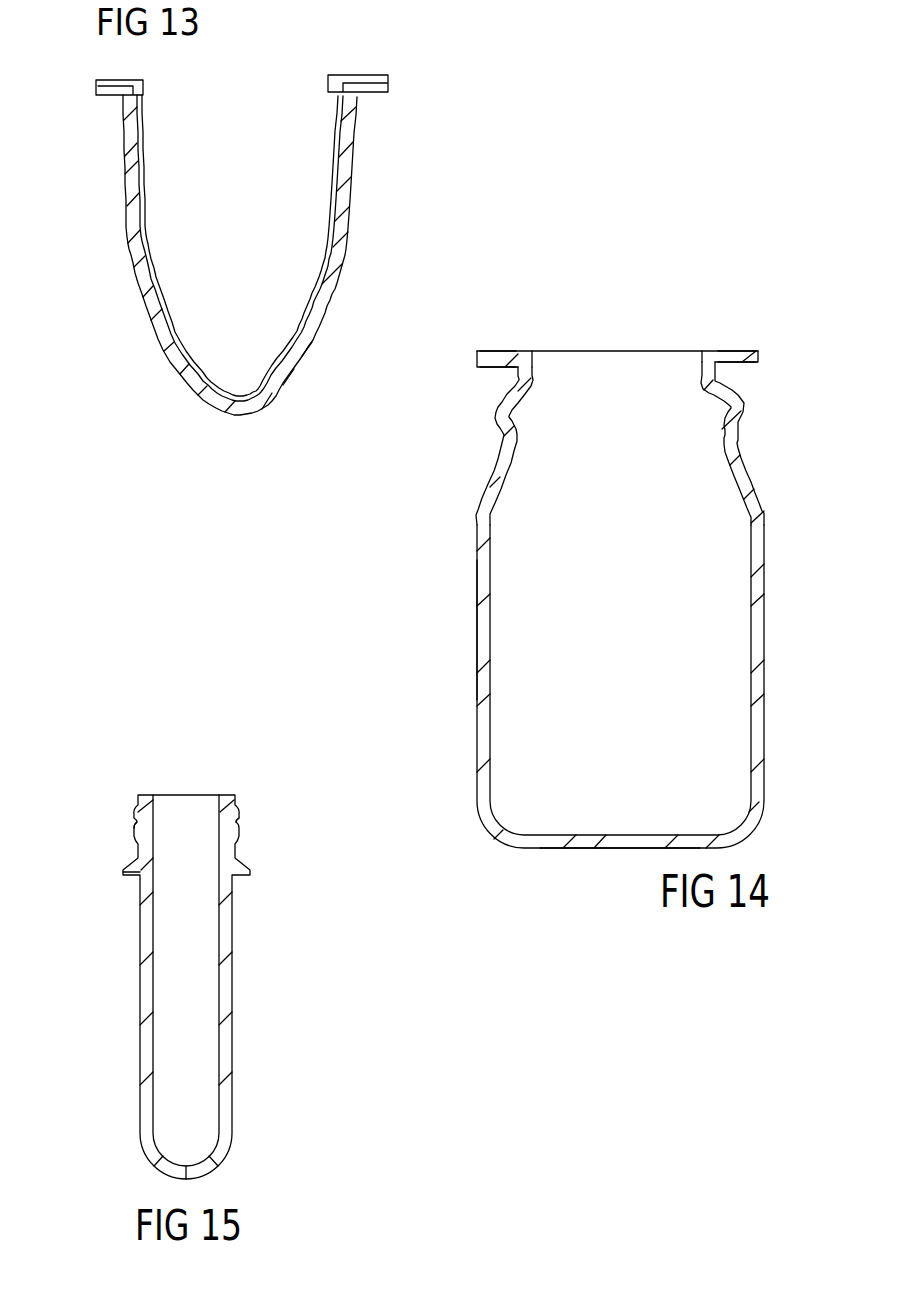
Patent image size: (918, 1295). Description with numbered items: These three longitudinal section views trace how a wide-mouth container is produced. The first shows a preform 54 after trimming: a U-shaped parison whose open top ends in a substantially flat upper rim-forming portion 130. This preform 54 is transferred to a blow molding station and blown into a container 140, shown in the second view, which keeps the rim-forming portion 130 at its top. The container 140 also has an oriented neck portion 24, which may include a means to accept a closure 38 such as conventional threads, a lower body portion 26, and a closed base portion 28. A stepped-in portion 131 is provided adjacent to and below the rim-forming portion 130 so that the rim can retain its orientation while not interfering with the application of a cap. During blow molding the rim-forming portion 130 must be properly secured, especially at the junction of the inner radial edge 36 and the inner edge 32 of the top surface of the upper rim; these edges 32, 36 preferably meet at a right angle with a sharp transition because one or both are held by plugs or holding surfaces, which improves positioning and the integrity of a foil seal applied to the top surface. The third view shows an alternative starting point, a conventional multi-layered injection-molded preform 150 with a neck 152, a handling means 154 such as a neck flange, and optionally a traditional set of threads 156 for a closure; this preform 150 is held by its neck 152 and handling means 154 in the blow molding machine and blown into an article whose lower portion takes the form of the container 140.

In FIG. 14, the oriented neck portion 24 is at (760, 378).
In FIG. 14, the lower body portion 26 is at (477, 609).
In FIG. 14, the closed base portion 28 is at (514, 846).
In FIG. 14, the inner edge of the top surface of the upper rim 32 is at (525, 351).
In FIG. 14, the inner radial edge 36 is at (540, 351).
In FIG. 14, the means to accept a closure 38 is at (500, 401).
In FIG. 13, the preform 54 is at (395, 153).
In FIG. 13, the rim-forming portion 130 is at (366, 75).
In FIG. 14, the rim-forming portion 130 is at (756, 350).
In FIG. 14, the stepped-in portion 131 is at (497, 378).
In FIG. 14, the container 140 is at (778, 478).
In FIG. 15, the conventional injection-molded preform 150 is at (122, 966).
In FIG. 15, the neck 152 is at (238, 832).
In FIG. 15, the handling means 154 is at (132, 864).
In FIG. 15, the threads 156 is at (137, 813).